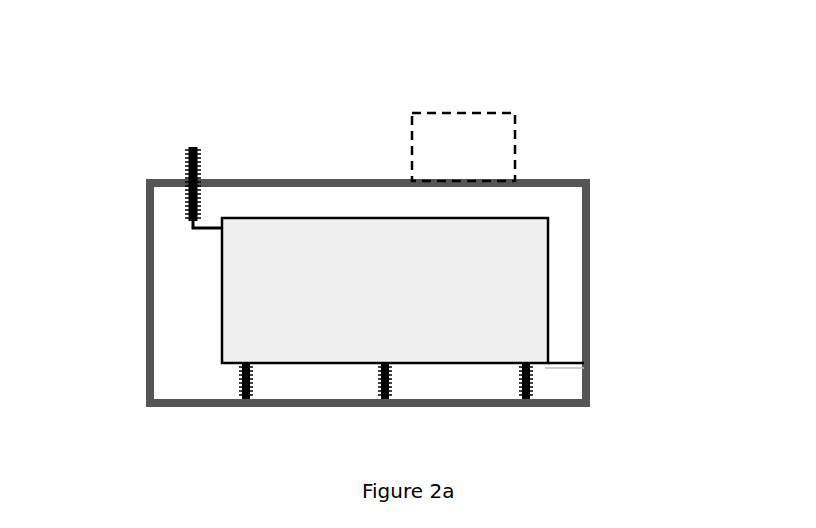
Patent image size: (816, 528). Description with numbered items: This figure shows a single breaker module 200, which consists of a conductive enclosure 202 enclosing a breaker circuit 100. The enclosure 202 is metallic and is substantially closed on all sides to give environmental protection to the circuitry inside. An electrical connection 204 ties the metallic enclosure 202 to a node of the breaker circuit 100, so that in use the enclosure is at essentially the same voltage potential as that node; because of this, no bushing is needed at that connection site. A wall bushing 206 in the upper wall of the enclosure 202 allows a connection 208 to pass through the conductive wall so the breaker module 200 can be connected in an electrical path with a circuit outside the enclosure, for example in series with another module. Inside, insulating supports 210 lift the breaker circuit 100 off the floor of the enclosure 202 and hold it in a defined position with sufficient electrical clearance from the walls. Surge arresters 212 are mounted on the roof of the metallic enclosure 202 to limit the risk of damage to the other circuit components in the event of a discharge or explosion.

The breaker module 200 is at (297, 107).
The conductive enclosure 202 is at (150, 375).
The electrical connection 204 is at (557, 357).
The wall bushing 206 is at (188, 148).
The connection 208 is at (190, 225).
The insulating supports 210 is at (388, 378).
The surge arresters 212 is at (517, 112).
The breaker circuit 100 is at (537, 263).